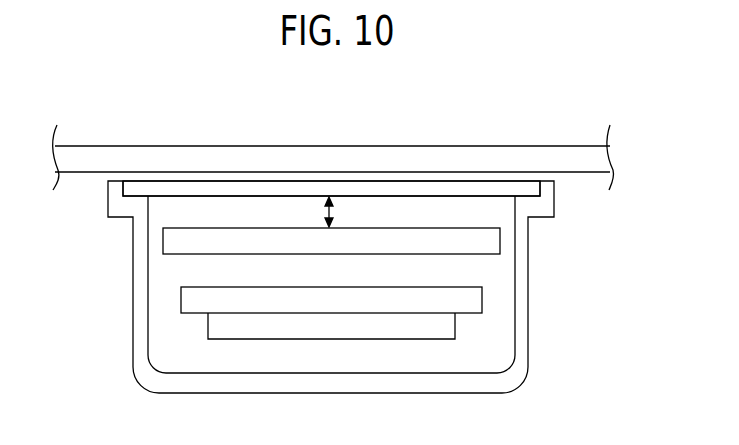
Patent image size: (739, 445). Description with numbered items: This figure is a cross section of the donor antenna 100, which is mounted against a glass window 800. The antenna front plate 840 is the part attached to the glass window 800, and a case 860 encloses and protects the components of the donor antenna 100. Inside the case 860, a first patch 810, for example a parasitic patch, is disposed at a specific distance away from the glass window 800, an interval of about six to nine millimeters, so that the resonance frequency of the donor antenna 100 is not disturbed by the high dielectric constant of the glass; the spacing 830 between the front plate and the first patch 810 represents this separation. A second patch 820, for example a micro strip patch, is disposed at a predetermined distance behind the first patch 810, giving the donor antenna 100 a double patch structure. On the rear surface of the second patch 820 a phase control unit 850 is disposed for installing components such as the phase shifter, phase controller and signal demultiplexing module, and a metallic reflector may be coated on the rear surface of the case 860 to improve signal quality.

The donor antenna 100 is at (113, 358).
The glass window 800 is at (463, 157).
The first patch 810 is at (488, 243).
The second patch 820 is at (468, 300).
The gap 830 is at (333, 210).
The antenna front plate 840 is at (159, 190).
The phase control unit 850 is at (413, 330).
The case 860 is at (240, 385).